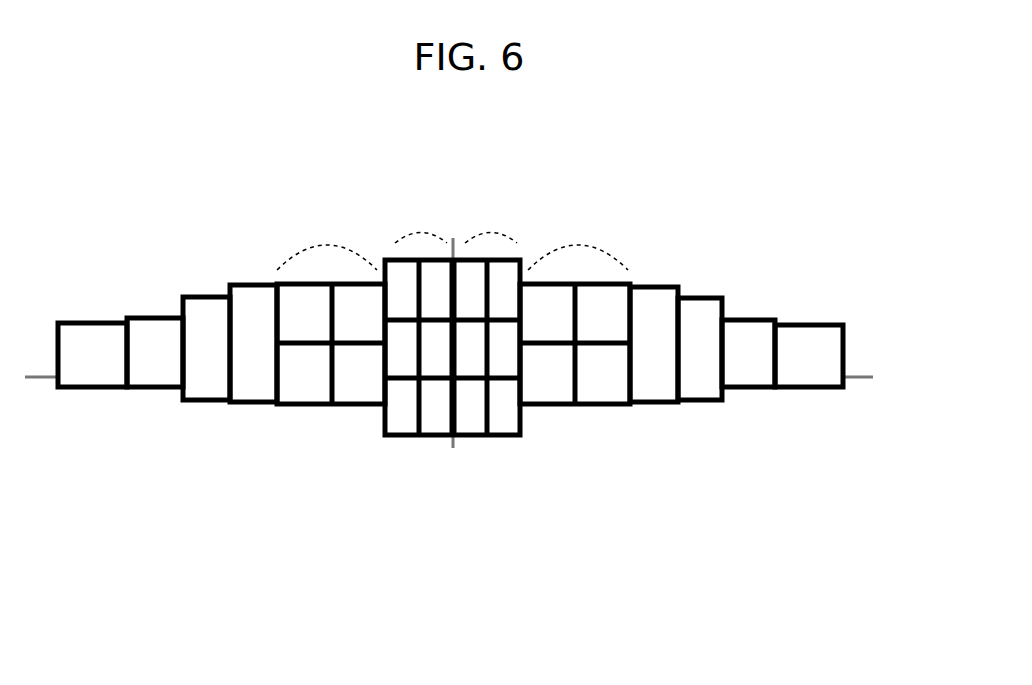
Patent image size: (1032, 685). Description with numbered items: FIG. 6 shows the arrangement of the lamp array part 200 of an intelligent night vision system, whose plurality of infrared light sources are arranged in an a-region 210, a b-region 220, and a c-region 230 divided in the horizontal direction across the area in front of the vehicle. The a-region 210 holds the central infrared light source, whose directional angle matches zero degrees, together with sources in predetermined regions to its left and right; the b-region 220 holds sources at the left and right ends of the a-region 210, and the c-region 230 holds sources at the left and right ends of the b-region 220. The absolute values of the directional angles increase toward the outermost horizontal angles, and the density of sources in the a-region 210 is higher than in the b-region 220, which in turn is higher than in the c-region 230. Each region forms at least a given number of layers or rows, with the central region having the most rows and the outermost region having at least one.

The lamp array part 200 is at (760, 227).
The a-region 210 is at (520, 447).
The b-region 220 is at (635, 458).
The c-region 230 is at (843, 458).